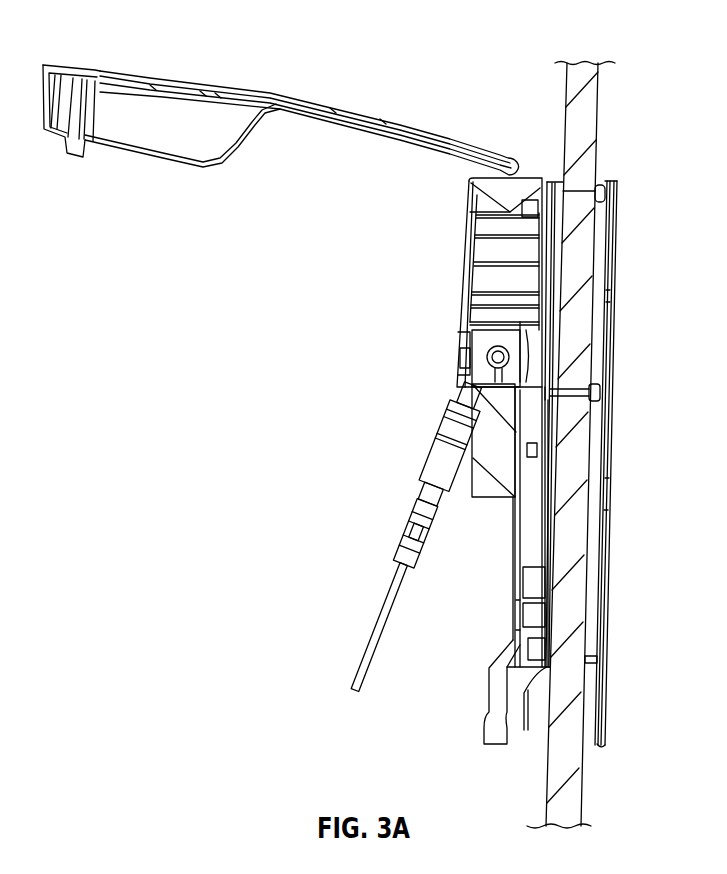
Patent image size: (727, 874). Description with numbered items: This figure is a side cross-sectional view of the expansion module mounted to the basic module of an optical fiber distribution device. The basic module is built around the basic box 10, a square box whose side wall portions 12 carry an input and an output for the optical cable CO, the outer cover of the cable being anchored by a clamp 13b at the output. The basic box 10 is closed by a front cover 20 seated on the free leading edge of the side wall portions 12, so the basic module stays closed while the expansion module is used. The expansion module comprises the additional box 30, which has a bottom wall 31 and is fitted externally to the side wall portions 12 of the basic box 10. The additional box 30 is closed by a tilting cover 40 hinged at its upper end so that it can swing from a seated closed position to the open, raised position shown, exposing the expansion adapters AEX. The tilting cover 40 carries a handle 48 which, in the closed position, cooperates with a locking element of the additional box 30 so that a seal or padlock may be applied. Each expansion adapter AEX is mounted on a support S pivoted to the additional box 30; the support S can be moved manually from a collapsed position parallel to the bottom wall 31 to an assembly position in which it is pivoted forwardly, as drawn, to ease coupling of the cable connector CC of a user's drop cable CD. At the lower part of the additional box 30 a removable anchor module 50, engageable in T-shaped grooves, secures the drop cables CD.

The tilting cover 40 is at (311, 104).
The handle 48 is at (88, 155).
The optical cable CO is at (604, 84).
The basic box 10 is at (608, 177).
The clamp 13b is at (577, 186).
The side wall portions 12 is at (598, 476).
The additional box 30 is at (460, 199).
The front cover 20 is at (538, 309).
The support S is at (458, 382).
The expansion adapters AEX is at (430, 447).
The cable connector CC is at (392, 551).
The drop cable CD is at (375, 656).
The bottom wall 31 is at (510, 615).
The anchor module 50 is at (484, 711).